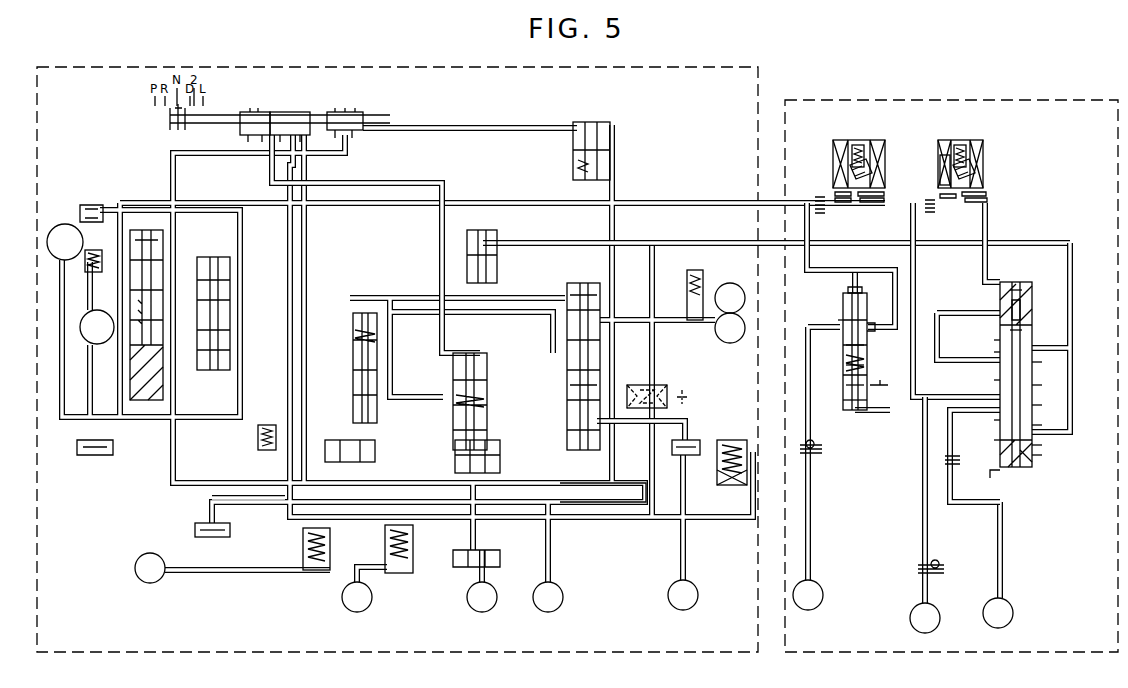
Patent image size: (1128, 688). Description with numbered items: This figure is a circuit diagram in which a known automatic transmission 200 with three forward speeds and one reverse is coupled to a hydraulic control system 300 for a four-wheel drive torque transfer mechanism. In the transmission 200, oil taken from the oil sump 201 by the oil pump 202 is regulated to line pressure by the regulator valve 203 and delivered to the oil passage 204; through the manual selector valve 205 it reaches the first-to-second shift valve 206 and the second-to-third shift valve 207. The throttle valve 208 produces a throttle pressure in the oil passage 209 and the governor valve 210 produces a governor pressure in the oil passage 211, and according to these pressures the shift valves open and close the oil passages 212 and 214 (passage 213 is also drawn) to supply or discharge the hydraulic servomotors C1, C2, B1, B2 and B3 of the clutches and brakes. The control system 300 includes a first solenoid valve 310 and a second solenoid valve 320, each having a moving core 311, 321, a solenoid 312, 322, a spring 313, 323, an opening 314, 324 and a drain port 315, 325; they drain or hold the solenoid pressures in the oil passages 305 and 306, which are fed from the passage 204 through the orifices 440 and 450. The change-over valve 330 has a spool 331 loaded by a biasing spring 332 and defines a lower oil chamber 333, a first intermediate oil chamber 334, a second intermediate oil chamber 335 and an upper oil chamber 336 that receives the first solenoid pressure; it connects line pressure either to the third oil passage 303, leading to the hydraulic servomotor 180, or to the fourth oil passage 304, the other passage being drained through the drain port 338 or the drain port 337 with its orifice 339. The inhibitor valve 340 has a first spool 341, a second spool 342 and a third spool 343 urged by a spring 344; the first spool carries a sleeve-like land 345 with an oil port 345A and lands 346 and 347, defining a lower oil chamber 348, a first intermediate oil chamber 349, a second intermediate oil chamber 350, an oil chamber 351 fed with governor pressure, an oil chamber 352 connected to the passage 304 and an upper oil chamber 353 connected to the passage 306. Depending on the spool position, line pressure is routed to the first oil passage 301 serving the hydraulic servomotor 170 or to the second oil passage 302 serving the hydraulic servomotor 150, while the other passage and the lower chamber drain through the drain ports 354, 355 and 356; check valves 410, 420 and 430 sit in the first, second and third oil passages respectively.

The automatic transmission 200 is at (752, 64).
The hydraulic control system 300 is at (808, 95).
The oil sump 201 is at (97, 458).
The oil pump 202 is at (124, 438).
The regulator valve 203 is at (147, 228).
The oil passage 204 is at (220, 192).
The manual selector valve 205 is at (289, 107).
The 1-2 shift valve 206 is at (598, 479).
The 2-3 shift valve 207 is at (503, 467).
The throttle valve 208 is at (350, 330).
The oil passage 209 is at (278, 370).
The governor valve 210 is at (661, 385).
The oil passage 211 is at (702, 242).
The oil passage 212 is at (515, 397).
The accumulator 213 is at (428, 465).
The oil passage 214 is at (540, 406).
The hydraulic servomotor C1 is at (157, 580).
The hydraulic servomotor C2 is at (372, 601).
The hydraulic servomotor B1 is at (562, 603).
The hydraulic servomotor B2 is at (692, 600).
The hydraulic servomotor B3 is at (745, 281).
The hydraulic servomotor 150 is at (1008, 620).
The hydraulic servomotor 170 is at (935, 620).
The hydraulic servomotor 180 is at (812, 599).
The first oil passage 301 is at (918, 521).
The second oil passage 302 is at (1002, 545).
The third oil passage 303 is at (812, 518).
The fourth oil passage 304 is at (940, 310).
The oil passage 305 is at (875, 279).
The oil passage 306 is at (990, 224).
The first solenoid valve 310 is at (893, 137).
The moving core 311 is at (873, 172).
The solenoid 312 is at (829, 161).
The spring 313 is at (855, 160).
The opening 314 is at (879, 198).
The drain port 315 is at (877, 189).
The second solenoid valve 320 is at (986, 140).
The moving core 321 is at (984, 168).
The solenoid 322 is at (935, 161).
The spring 323 is at (963, 150).
The opening 324 is at (990, 201).
The drain port 325 is at (988, 190).
The change-over valve 330 is at (862, 414).
The spool 331 is at (845, 352).
The biasing spring 332 is at (845, 404).
The lower oil chamber 333 is at (845, 392).
The first intermediate oil chamber 334 is at (845, 372).
The second intermediate oil chamber 335 is at (837, 326).
The upper oil chamber 336 is at (842, 302).
The drain port 337 is at (876, 407).
The drain port 338 is at (876, 326).
The orifice 339 is at (880, 412).
The inhibitor valve 340 is at (1016, 471).
The first spool 341 is at (1037, 384).
The second spool 342 is at (1027, 322).
The third spool 343 is at (1032, 293).
The spring 344 is at (985, 467).
The sleeve-like land 345 is at (1035, 463).
The oil port 345A is at (1037, 456).
The land 346 is at (1037, 403).
The land 347 is at (996, 358).
The lower oil chamber 348 is at (998, 438).
The first intermediate oil chamber 349 is at (998, 420).
The second intermediate oil chamber 350 is at (998, 384).
The oil chamber 351 is at (996, 342).
The oil chamber 352 is at (1000, 309).
The upper oil chamber 353 is at (1030, 278).
The drain port 354 is at (1037, 445).
The drain port 355 is at (1037, 423).
The drain port 356 is at (1037, 360).
The check valve 410 is at (932, 562).
The check valve 420 is at (953, 472).
The check valve 430 is at (809, 454).
The orifice 440 is at (818, 194).
The orifice 450 is at (932, 213).